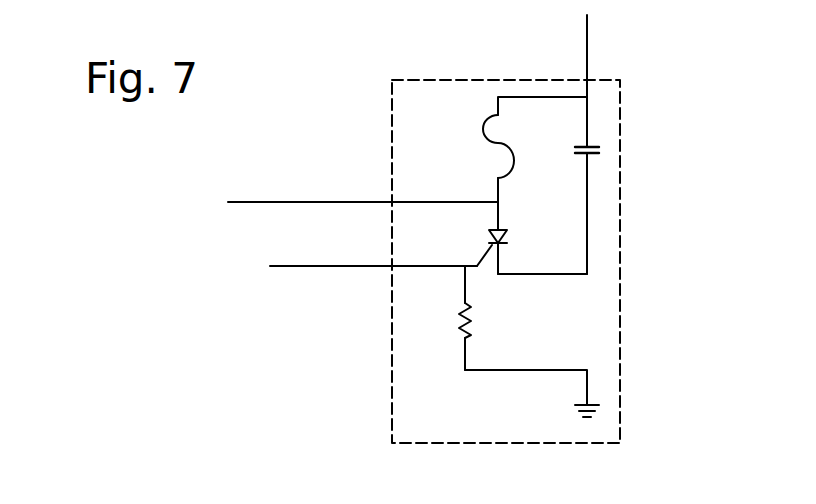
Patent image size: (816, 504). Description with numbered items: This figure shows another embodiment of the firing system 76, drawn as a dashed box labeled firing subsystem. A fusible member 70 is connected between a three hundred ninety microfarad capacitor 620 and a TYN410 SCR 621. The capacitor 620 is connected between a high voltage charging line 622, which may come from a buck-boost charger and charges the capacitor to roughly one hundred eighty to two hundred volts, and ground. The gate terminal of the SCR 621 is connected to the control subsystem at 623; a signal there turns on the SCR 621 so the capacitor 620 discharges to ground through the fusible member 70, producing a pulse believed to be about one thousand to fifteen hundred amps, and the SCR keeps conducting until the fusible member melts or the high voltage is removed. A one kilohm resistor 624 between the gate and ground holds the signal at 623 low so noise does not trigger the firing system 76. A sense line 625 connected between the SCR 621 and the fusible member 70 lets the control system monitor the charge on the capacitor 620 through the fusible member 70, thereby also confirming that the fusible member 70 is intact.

The fusible member 70 is at (482, 126).
The firing system 76 is at (390, 372).
The capacitor 620 is at (593, 153).
The SCR 621 is at (498, 245).
The high voltage charging line 622 is at (587, 58).
The control subsystem connection 623 is at (355, 267).
The resistor 624 is at (475, 325).
The sense line 625 is at (280, 203).